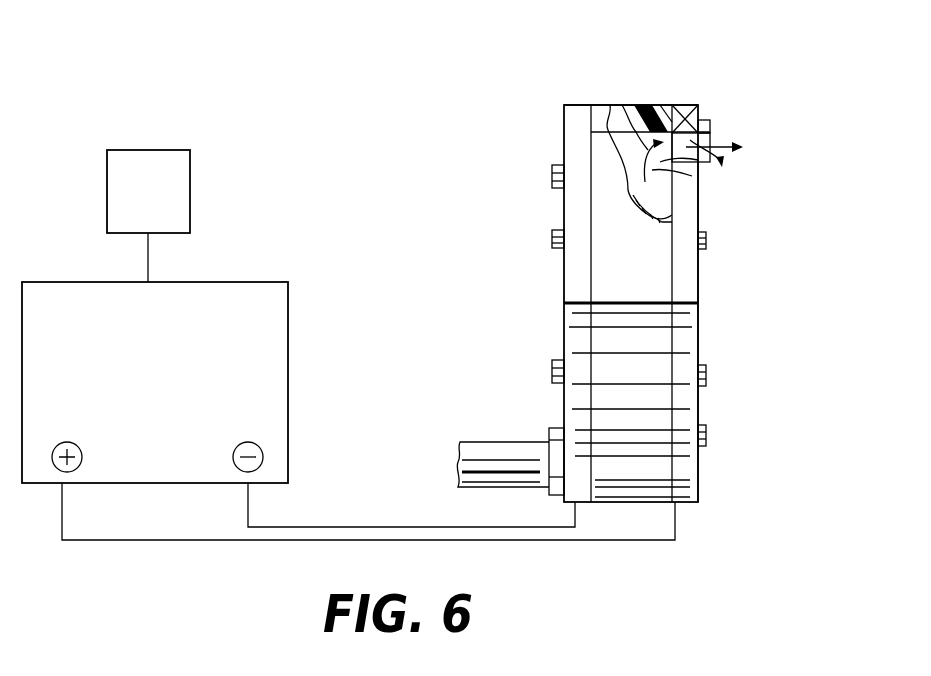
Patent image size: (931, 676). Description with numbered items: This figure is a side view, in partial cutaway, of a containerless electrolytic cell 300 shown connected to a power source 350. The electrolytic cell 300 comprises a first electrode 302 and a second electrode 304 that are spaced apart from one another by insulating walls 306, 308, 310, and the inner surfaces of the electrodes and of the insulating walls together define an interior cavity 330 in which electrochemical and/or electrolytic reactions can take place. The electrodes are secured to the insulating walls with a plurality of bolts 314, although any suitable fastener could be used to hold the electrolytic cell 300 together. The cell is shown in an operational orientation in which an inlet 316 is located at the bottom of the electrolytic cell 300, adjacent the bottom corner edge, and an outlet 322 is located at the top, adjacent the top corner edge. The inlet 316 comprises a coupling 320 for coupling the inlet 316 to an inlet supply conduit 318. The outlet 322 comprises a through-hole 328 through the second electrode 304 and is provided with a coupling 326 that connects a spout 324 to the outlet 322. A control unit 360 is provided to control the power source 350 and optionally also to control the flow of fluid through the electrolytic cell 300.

The electrolytic cell 300 is at (512, 162).
The first electrode 302 is at (564, 272).
The second electrode 304 is at (700, 272).
The insulating wall 306 is at (585, 131).
The insulating wall 308 is at (647, 347).
The insulating wall 310 is at (612, 110).
The bolts 314 is at (706, 437).
The inlet 316 is at (515, 433).
The inlet supply conduit 318 is at (462, 443).
The coupling 320 is at (553, 497).
The outlet 322 is at (730, 119).
The spout 324 is at (700, 153).
The coupling 326 is at (699, 118).
The through-hole 328 is at (696, 107).
The interior cavity 330 is at (672, 183).
The power source 350 is at (168, 372).
The control unit 360 is at (168, 196).